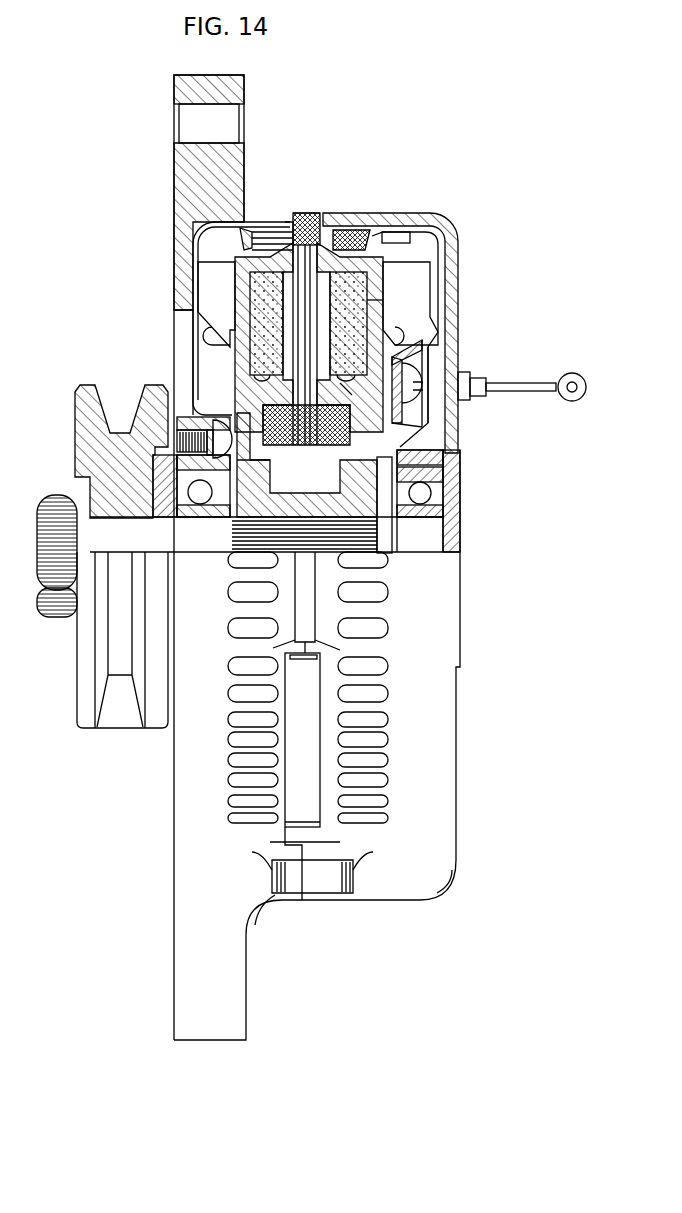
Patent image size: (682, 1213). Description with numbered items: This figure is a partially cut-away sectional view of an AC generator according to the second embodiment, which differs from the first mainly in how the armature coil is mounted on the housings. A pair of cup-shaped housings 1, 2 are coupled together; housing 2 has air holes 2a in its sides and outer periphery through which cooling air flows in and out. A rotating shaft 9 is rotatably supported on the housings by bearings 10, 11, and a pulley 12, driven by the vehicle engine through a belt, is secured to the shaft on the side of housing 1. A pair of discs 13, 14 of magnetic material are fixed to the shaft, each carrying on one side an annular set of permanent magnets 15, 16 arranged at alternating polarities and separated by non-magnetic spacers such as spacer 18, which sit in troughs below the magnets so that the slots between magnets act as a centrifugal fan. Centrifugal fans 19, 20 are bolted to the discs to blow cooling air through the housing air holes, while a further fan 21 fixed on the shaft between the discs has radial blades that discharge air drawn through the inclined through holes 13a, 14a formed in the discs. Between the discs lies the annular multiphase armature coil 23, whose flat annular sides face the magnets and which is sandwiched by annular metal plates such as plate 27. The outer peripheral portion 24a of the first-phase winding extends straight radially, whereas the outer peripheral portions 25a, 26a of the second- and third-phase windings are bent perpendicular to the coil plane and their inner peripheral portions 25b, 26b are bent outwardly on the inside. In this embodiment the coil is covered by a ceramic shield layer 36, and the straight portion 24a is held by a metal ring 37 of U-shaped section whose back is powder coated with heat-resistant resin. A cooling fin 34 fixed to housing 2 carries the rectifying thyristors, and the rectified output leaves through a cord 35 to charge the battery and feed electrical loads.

The housing 1 is at (174, 169).
The housing 2 is at (435, 213).
The air holes 2a is at (380, 213).
The rotating shaft 9 is at (120, 526).
The bearing 10 is at (178, 477).
The bearing 11 is at (458, 460).
The pulley 12 is at (81, 703).
The disc 13 is at (183, 338).
The through hole 13a is at (258, 480).
The disc 14 is at (368, 432).
The through hole 14a is at (380, 553).
The permanent magnets 15 is at (245, 280).
The permanent magnets 16 is at (370, 307).
The spacer 18 is at (361, 392).
The centrifugal fan 19 is at (213, 302).
The centrifugal fan 20 is at (420, 273).
The fan 21 is at (228, 522).
The armature coil 23 is at (285, 222).
The outer peripheral portion 24a is at (318, 213).
The outer peripheral portion 25a is at (250, 228).
The inner peripheral portion 25b is at (232, 409).
The outer peripheral portion 26a is at (350, 230).
The inner peripheral portion 26b is at (346, 445).
The annular metal plate 27 is at (283, 345).
The cooling fin 34 is at (420, 351).
The cord 35 is at (559, 382).
The shield layer 36 is at (372, 304).
The metal ring 37 is at (297, 213).